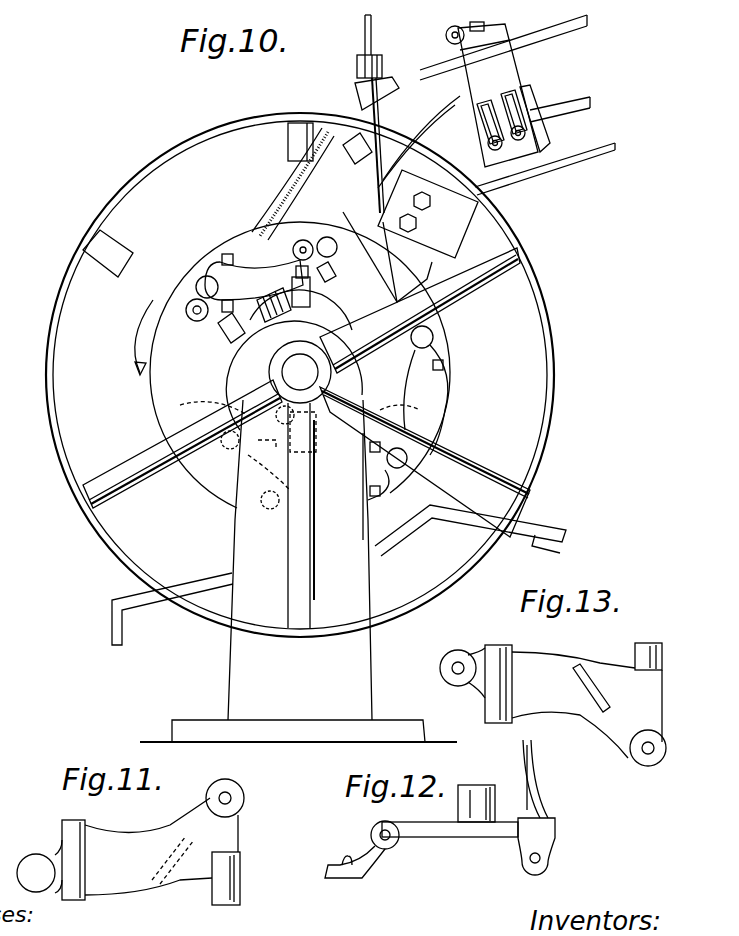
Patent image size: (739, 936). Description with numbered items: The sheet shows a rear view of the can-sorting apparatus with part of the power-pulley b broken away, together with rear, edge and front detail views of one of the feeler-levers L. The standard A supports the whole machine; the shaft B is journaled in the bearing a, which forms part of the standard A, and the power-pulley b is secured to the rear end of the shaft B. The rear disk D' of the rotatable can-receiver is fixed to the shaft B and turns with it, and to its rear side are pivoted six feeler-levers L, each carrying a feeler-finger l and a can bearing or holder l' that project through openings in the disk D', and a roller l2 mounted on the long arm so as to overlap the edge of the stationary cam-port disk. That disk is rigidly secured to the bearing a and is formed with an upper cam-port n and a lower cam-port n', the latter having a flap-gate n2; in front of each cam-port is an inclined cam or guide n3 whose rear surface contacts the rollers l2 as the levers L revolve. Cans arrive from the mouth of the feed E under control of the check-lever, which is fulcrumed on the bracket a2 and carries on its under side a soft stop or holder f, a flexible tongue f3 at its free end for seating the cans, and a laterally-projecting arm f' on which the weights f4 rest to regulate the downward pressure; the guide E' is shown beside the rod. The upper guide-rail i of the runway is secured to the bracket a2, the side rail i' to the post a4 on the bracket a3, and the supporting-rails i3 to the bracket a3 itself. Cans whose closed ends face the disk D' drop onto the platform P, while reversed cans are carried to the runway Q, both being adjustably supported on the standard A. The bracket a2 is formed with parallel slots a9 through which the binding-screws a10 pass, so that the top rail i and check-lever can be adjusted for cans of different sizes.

In FIG. 10, the standard A is at (298, 571).
In FIG. 10, the shaft B is at (300, 372).
In FIG. 10, the power-pulley b is at (304, 375).
In FIG. 10, the platform P is at (172, 602).
In FIG. 10, the runway Q is at (470, 528).
In FIG. 10, the disk D' is at (292, 365).
In FIG. 10, the bearing a is at (308, 289).
In FIG. 10, the upper cam-port n is at (285, 309).
In FIG. 10, the flap-gate n2 is at (326, 278).
In FIG. 10, the inclined cam or guide n3 is at (294, 285).
In FIG. 10, the lower cam-port n' is at (284, 432).
In FIG. 10, the feeler-lever L is at (314, 388).
In FIG. 11, the feeler-lever L is at (130, 844).
In FIG. 12, the feeler-lever L is at (421, 849).
In FIG. 13, the feeler-lever L is at (553, 705).
In FIG. 12, the feeler-finger l is at (538, 807).
In FIG. 13, the feeler-finger l is at (638, 738).
In FIG. 11, the can bearing or holder l' is at (173, 860).
In FIG. 12, the can bearing or holder l' is at (483, 803).
In FIG. 13, the can bearing or holder l' is at (593, 688).
In FIG. 10, the roller l2 is at (221, 337).
In FIG. 11, the roller l2 is at (234, 878).
In FIG. 13, the roller l2 is at (658, 653).
In FIG. 10, the feed E is at (336, 164).
In FIG. 10, the guide E' is at (401, 199).
In FIG. 10, the stop or holder f is at (351, 154).
In FIG. 10, the laterally-projecting arm f' is at (360, 82).
In FIG. 10, the flexible tongue f3 is at (267, 198).
In FIG. 10, the weights f4 is at (381, 114).
In FIG. 10, the bracket a2 is at (498, 94).
In FIG. 10, the bracket a3 is at (428, 214).
In FIG. 10, the post a4 is at (479, 150).
In FIG. 10, the parallel slots a9 is at (512, 100).
In FIG. 10, the binding-screws a10 is at (525, 134).
In FIG. 10, the upper guide-rail i is at (503, 45).
In FIG. 10, the side rail i' is at (560, 101).
In FIG. 10, the supporting-rails i3 is at (545, 172).